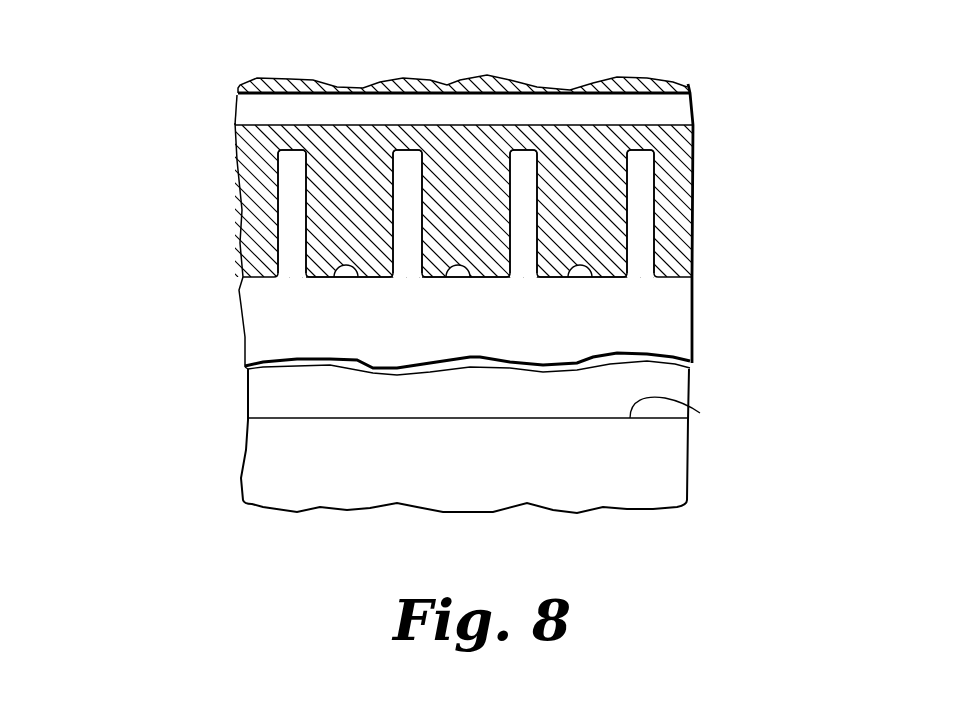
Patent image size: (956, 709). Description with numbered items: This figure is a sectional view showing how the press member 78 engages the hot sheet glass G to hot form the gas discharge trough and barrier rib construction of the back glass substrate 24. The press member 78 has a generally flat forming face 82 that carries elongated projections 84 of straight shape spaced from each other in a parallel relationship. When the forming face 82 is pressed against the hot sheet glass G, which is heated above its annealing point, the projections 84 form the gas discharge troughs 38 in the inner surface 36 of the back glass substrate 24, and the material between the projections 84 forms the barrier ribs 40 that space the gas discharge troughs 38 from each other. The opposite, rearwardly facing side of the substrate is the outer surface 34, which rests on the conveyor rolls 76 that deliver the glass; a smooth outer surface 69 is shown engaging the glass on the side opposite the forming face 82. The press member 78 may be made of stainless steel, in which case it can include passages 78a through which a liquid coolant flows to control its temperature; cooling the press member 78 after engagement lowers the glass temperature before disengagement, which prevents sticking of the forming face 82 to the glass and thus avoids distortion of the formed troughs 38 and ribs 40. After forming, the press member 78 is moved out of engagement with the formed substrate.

The back glass substrate 24 is at (233, 368).
The outer surface 34 is at (317, 418).
The inner surface 36 is at (657, 148).
The gas discharge troughs 38 is at (352, 281).
The barrier ribs 40 is at (290, 158).
The smooth outer surface 69 is at (700, 413).
The rolls 76 is at (662, 452).
The press member 78 is at (238, 91).
The passages 78a is at (272, 96).
The forming face 82 is at (318, 280).
The elongated projections 84 is at (423, 242).
The hot sheet glass G is at (703, 315).